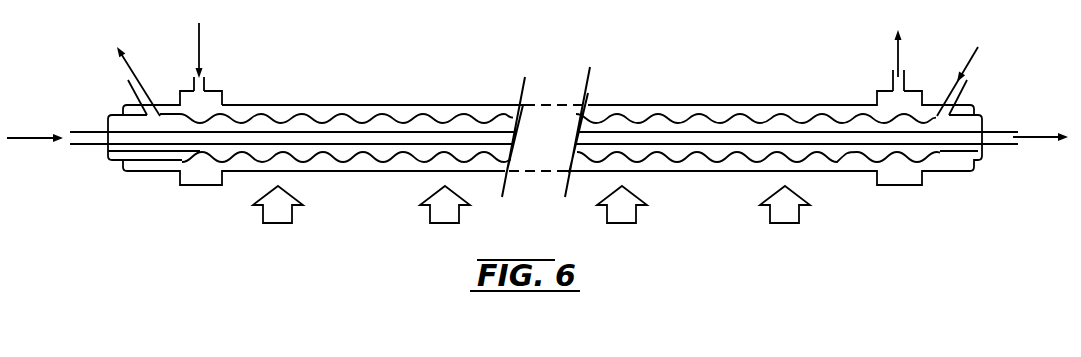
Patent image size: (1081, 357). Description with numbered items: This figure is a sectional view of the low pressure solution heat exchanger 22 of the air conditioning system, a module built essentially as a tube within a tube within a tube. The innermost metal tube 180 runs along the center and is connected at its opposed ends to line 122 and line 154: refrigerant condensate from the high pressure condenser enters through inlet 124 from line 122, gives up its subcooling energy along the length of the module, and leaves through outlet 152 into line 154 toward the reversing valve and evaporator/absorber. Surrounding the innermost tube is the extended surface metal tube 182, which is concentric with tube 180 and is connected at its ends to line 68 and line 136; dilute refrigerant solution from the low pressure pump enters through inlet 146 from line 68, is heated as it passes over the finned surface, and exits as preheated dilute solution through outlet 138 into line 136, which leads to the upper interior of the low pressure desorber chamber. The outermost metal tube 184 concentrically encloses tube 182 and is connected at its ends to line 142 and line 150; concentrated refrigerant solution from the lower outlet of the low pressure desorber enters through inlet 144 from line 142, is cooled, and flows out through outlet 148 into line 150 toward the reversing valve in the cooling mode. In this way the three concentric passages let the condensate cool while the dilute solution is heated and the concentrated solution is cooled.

The low pressure solution heat exchanger 22 is at (689, 103).
The line 68 is at (971, 59).
The line 122 is at (35, 131).
The inlet 124 is at (92, 146).
The line 136 is at (131, 66).
The outlet 138 is at (135, 92).
The line 142 is at (203, 35).
The inlet 144 is at (206, 81).
The inlet 146 is at (960, 96).
The outlet 148 is at (893, 80).
The line 150 is at (1044, 139).
The outlet 152 is at (1003, 146).
The line 154 is at (900, 63).
The innermost metal tube 180 is at (370, 117).
The extended surface metal tube 182 is at (427, 116).
The metal tube 184 is at (485, 104).